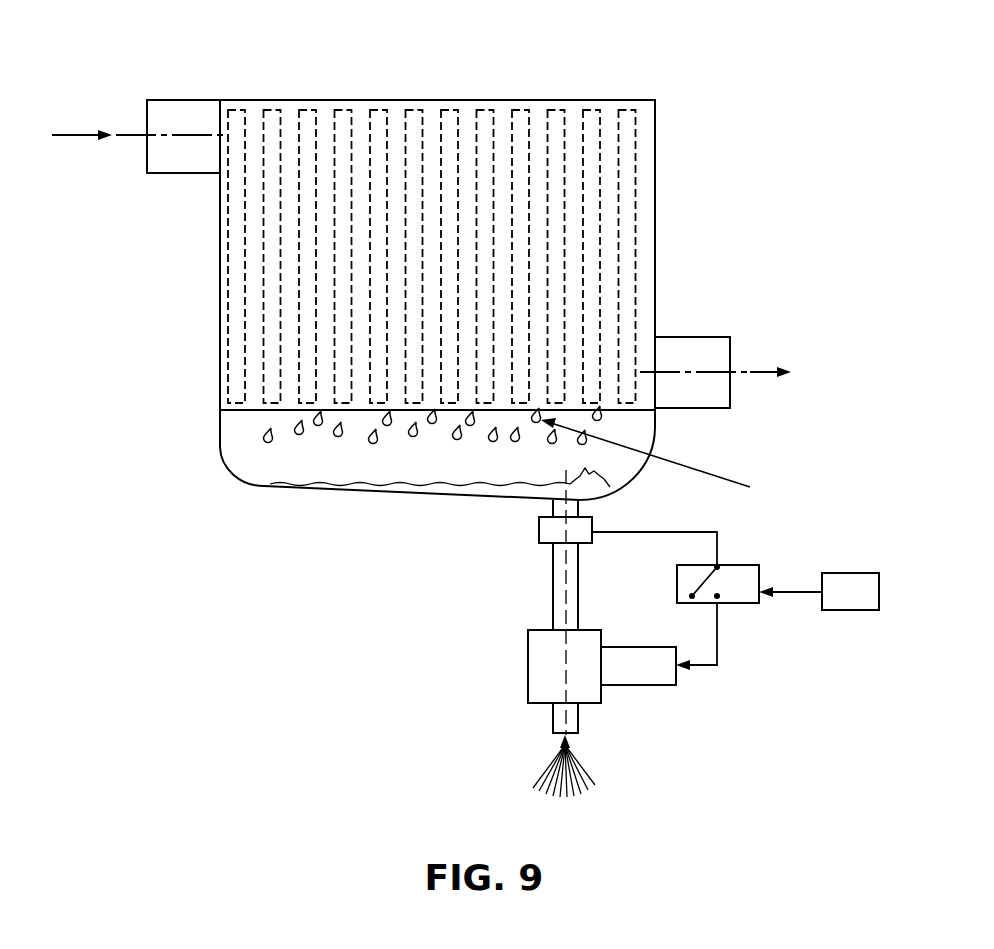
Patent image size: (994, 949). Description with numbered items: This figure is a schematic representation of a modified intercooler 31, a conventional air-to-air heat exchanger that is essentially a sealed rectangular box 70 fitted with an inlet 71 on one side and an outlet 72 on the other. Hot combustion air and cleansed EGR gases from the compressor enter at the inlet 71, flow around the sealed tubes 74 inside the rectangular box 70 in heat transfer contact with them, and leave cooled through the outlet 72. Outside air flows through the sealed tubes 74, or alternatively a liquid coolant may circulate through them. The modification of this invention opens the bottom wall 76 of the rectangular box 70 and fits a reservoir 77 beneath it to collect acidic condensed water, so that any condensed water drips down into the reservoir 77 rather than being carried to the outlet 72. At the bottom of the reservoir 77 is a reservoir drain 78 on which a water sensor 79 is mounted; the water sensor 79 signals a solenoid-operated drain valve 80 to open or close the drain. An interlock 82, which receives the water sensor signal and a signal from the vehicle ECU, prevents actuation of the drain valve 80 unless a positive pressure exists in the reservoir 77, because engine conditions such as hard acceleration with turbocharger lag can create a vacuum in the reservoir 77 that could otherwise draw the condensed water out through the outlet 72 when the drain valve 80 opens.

The intercooler 31 is at (200, 263).
The rectangular box 70 is at (357, 100).
The inlet 71 is at (170, 173).
The outlet 72 is at (705, 337).
The sealed tubes 74 is at (603, 122).
The bottom wall 76 is at (265, 411).
The reservoir 77 is at (247, 483).
The reservoir drain 78 is at (580, 505).
The water sensor 79 is at (524, 535).
The solenoid-operated drain valve 80 is at (528, 670).
The interlock 82 is at (759, 582).